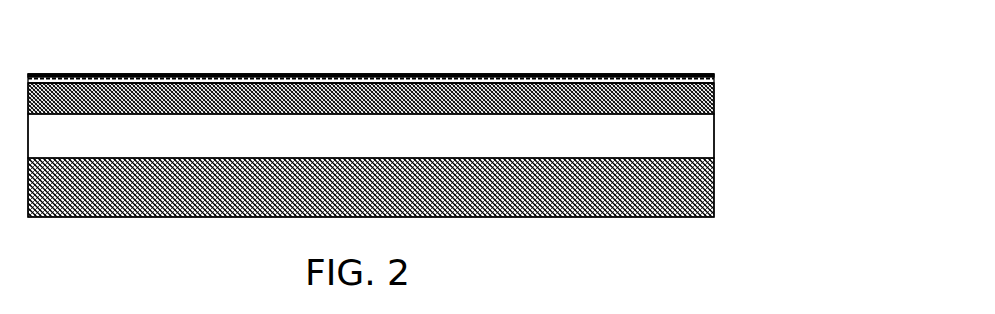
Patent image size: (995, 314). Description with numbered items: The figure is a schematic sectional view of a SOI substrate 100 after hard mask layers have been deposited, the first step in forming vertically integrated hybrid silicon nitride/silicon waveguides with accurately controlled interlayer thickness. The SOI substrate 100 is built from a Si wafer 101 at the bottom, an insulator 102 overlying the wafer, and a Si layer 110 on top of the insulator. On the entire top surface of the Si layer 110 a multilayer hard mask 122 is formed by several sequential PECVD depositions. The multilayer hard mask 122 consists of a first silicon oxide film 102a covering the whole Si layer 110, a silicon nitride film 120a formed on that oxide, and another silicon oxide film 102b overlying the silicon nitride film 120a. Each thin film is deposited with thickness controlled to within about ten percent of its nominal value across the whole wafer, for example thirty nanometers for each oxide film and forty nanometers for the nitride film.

The SOI substrate 100 is at (720, 86).
The Si wafer 101 is at (348, 211).
The insulator 102 is at (470, 147).
The Si layer 110 is at (143, 107).
The first silicon oxide film 102a is at (716, 80).
The silicon nitride film 120a is at (715, 78).
The silicon oxide film 102b is at (715, 76).
The multilayer hard mask 122 is at (794, 22).